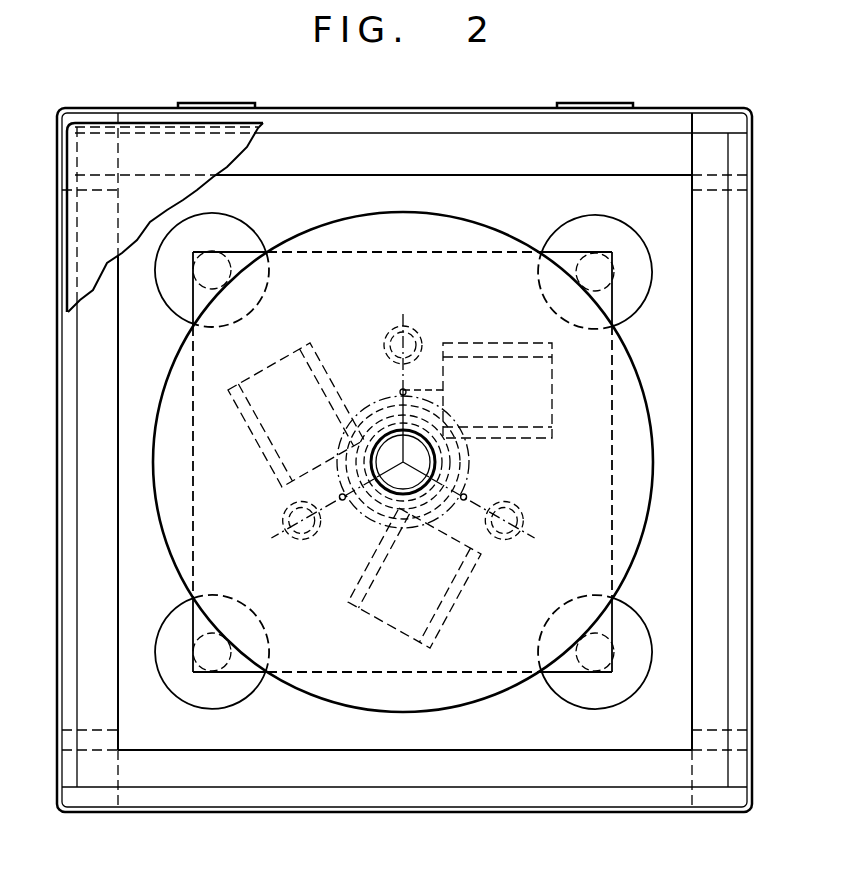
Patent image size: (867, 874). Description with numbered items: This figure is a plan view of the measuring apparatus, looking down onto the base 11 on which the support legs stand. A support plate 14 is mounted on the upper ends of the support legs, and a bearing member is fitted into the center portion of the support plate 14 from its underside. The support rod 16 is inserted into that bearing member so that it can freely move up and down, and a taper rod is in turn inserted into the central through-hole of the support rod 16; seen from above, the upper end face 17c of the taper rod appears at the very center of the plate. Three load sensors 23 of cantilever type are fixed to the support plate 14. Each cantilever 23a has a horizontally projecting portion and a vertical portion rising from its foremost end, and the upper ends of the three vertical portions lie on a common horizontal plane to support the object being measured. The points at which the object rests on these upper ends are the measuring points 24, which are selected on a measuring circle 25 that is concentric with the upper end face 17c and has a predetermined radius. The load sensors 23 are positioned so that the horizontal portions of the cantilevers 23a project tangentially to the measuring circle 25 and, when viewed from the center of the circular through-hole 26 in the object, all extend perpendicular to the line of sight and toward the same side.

The base 11 is at (667, 557).
The support plate 14 is at (614, 413).
The support rod 16 is at (443, 420).
The upper end face of taper rod 17c is at (393, 450).
The load sensor 23 is at (268, 381).
The cantilever 23a is at (421, 388).
The measuring point 24 is at (401, 391).
The measuring circle 25 is at (473, 453).
The through-hole 26 is at (388, 492).